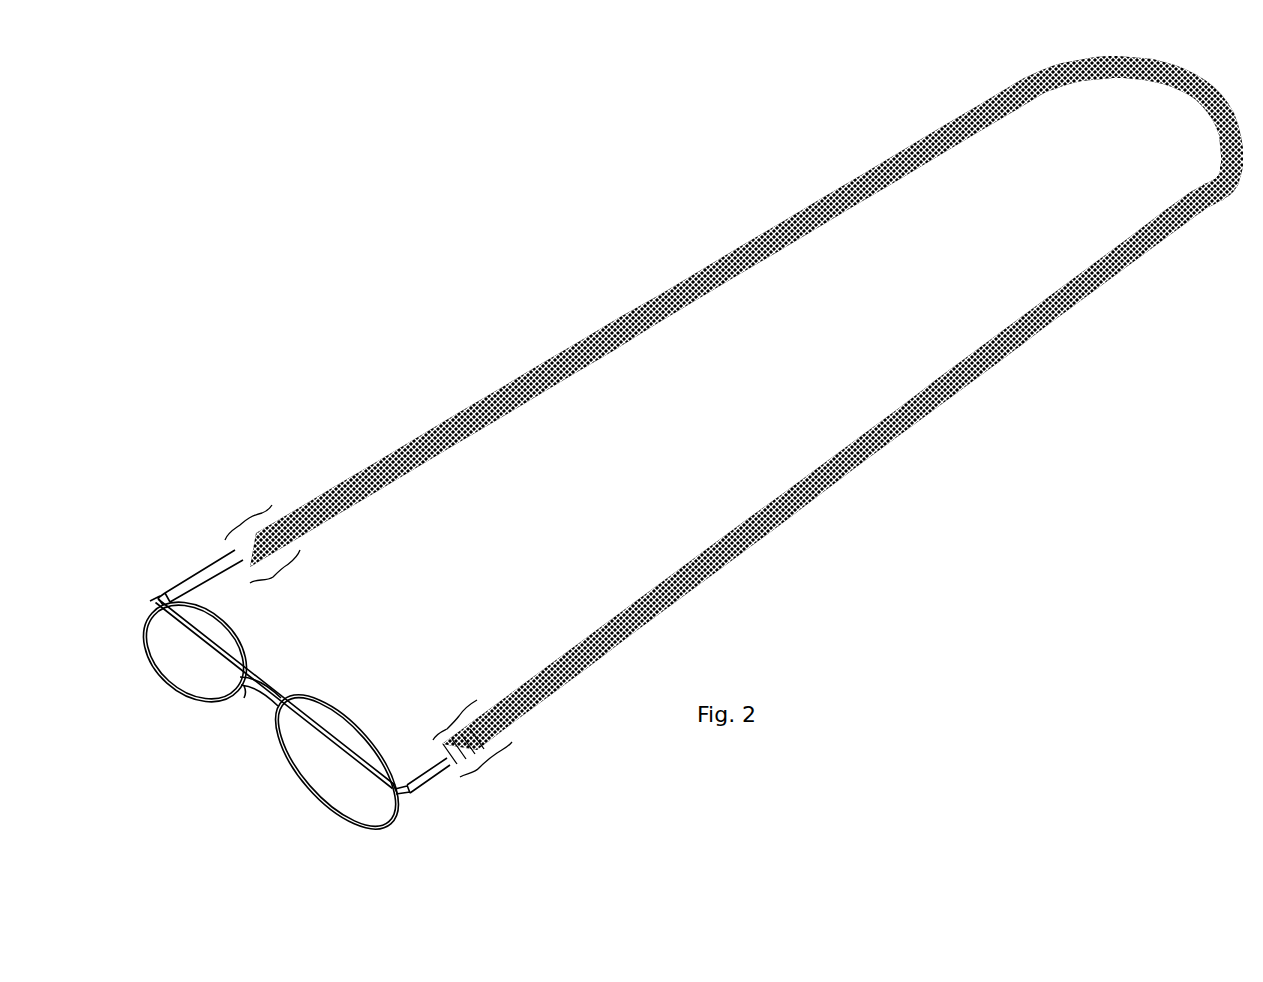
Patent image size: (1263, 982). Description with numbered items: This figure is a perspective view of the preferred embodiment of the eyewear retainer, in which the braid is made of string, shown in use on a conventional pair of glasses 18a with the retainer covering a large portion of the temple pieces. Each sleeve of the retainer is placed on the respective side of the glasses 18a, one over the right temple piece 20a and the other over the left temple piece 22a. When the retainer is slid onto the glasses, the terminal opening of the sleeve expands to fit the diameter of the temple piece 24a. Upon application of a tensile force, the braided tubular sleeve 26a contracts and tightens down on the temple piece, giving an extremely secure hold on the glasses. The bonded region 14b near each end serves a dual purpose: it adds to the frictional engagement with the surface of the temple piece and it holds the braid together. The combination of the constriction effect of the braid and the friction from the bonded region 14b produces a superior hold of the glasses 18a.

The bonded region 14b is at (243, 517).
The glasses 18a is at (257, 697).
The right temple piece 20a is at (184, 577).
The left temple piece 22a is at (436, 775).
The temple piece 24a is at (440, 764).
The braided tubular sleeve 26a is at (525, 728).